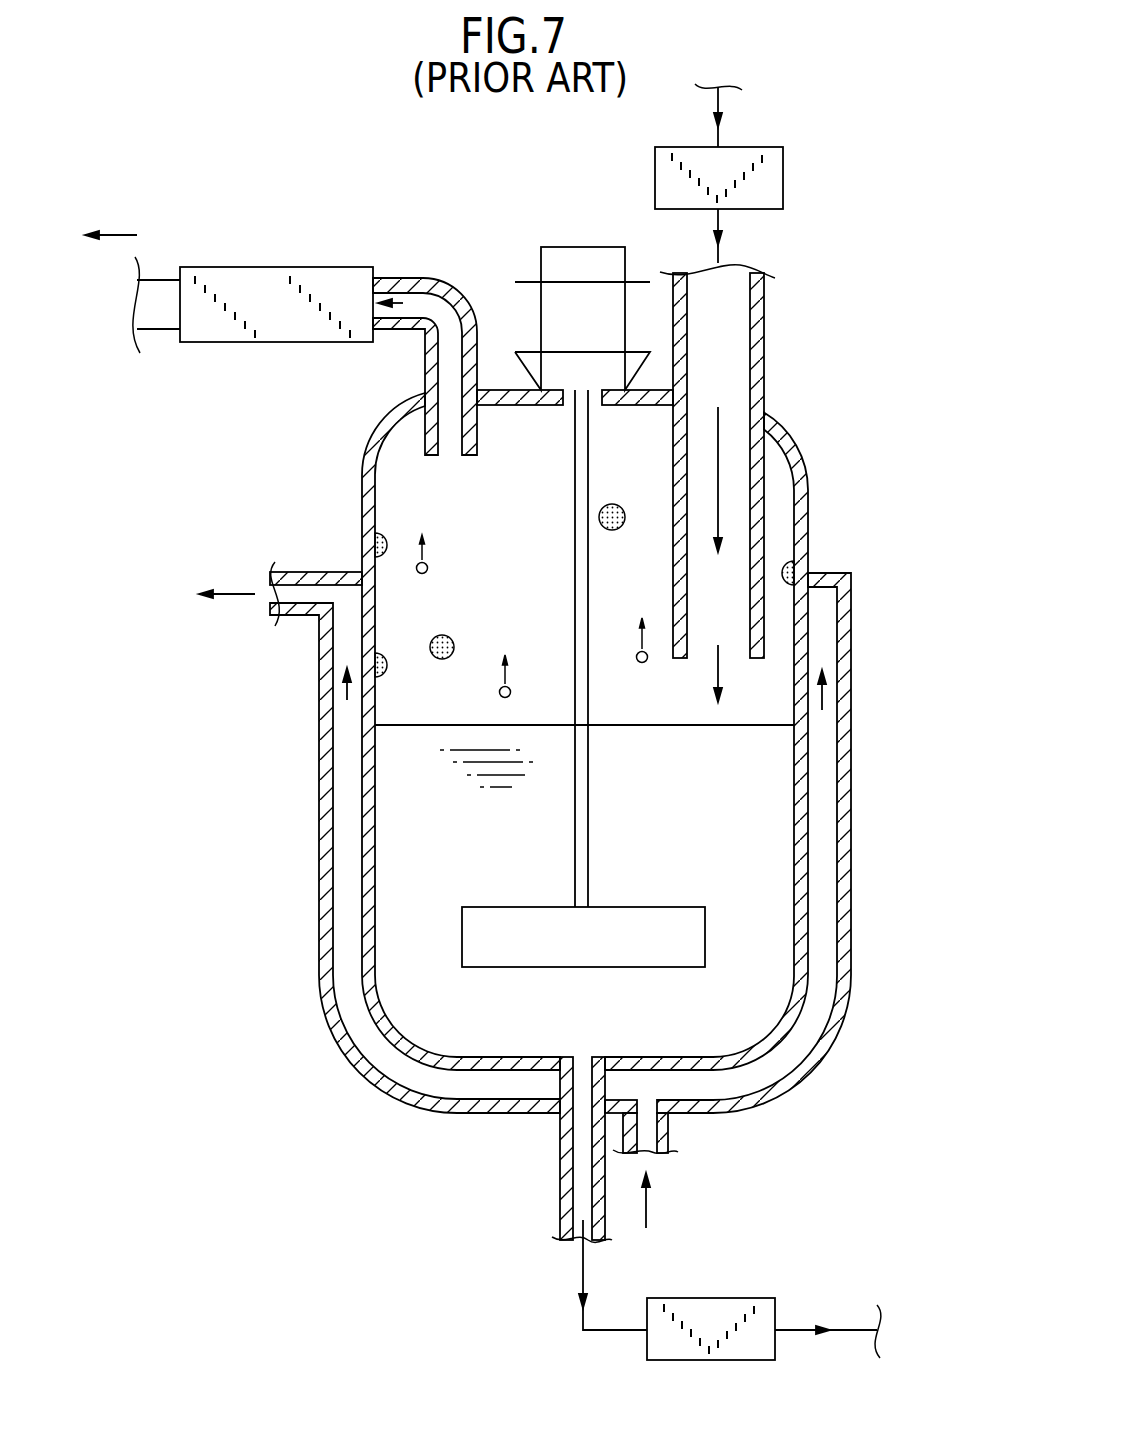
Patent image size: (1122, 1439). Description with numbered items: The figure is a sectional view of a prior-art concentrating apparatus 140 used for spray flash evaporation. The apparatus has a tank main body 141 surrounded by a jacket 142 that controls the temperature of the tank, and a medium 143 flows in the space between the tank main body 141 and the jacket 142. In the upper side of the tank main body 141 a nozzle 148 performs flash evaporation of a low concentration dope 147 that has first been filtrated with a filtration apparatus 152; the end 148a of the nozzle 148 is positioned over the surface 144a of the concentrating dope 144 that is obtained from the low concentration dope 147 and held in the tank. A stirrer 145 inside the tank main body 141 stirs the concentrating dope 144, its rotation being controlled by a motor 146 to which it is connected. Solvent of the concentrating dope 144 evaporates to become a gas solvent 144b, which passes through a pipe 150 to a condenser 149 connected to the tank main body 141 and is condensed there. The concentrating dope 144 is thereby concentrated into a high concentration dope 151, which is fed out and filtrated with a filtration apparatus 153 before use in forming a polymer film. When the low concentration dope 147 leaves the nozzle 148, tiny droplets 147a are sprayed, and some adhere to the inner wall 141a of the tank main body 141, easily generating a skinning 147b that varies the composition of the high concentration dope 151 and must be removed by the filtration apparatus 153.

The concentrating apparatus 140 is at (313, 223).
The tank main body 141 is at (360, 546).
The inner wall 141a is at (400, 440).
The jacket 142 is at (325, 840).
The medium 143 is at (647, 1213).
The concentrating dope 144 is at (490, 1027).
The surface 144a is at (403, 725).
The gas solvent 144b is at (430, 568).
The stirrer 145 is at (488, 948).
The motor 146 is at (568, 263).
The low concentration dope 147 is at (722, 217).
The tiny droplets 147a is at (608, 507).
The skinning 147b is at (786, 565).
The nozzle 148 is at (765, 392).
The end 148a is at (723, 660).
The condenser 149 is at (268, 335).
The pipe 150 is at (435, 293).
The high concentration dope 151 is at (583, 1272).
The filtration apparatus 152 is at (673, 173).
The filtration apparatus 153 is at (710, 1310).